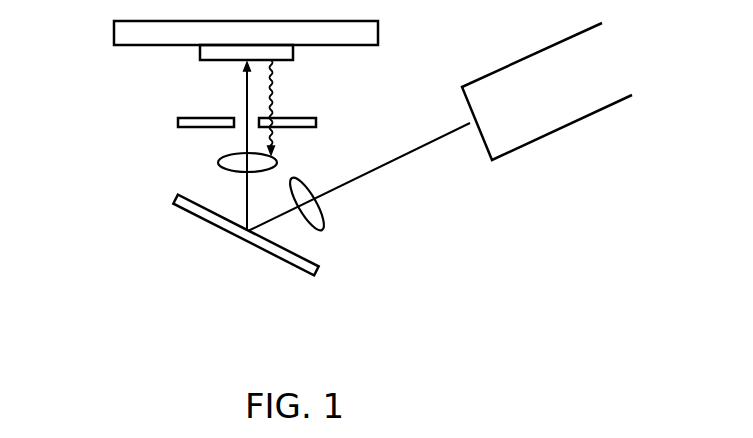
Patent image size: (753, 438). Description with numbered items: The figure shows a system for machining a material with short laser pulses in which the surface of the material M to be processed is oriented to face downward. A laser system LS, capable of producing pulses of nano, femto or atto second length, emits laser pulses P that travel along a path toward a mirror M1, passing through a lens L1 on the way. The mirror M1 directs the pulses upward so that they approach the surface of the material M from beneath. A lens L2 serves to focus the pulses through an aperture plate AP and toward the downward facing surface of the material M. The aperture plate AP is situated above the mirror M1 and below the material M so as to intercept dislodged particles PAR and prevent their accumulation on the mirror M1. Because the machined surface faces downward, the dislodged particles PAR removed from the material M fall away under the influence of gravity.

The material M is at (196, 55).
The dislodged particles PAR is at (280, 102).
The aperture plate AP is at (177, 132).
The lens L2 is at (286, 158).
The mirror M1 is at (266, 260).
The laser pulses P is at (408, 162).
The lens L1 is at (332, 235).
The laser system LS is at (570, 131).